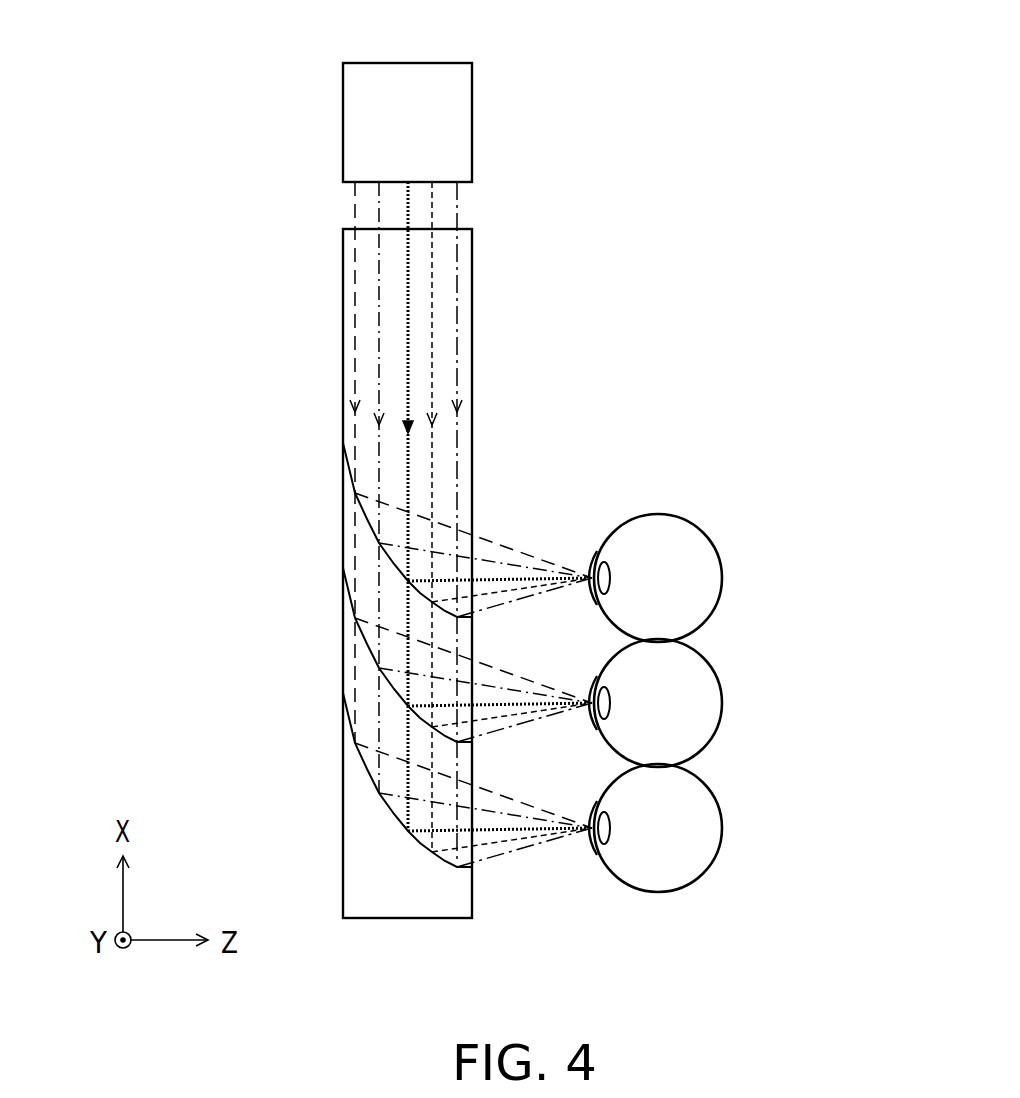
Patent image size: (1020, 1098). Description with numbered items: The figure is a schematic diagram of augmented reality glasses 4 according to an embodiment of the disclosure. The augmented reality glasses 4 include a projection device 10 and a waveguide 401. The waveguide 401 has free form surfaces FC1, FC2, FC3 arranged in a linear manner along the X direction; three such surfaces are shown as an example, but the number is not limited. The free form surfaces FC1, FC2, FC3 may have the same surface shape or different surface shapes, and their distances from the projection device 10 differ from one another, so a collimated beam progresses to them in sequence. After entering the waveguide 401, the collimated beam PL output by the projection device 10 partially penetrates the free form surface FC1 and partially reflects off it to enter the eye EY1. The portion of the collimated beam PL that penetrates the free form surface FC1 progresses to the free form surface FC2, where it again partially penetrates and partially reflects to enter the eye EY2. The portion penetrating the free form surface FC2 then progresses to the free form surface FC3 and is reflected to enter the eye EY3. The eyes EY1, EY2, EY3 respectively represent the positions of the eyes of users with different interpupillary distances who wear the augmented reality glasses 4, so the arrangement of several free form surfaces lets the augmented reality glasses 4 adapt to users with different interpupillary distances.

The augmented reality glasses 4 is at (858, 956).
The projection device 10 is at (438, 62).
The collimated beam PL is at (352, 207).
The waveguide 401 is at (473, 413).
The free form surface FC1 is at (359, 517).
The free form surface FC2 is at (359, 643).
The free form surface FC3 is at (359, 766).
The eye EY1 is at (712, 579).
The eye EY2 is at (712, 704).
The eye EY3 is at (712, 829).